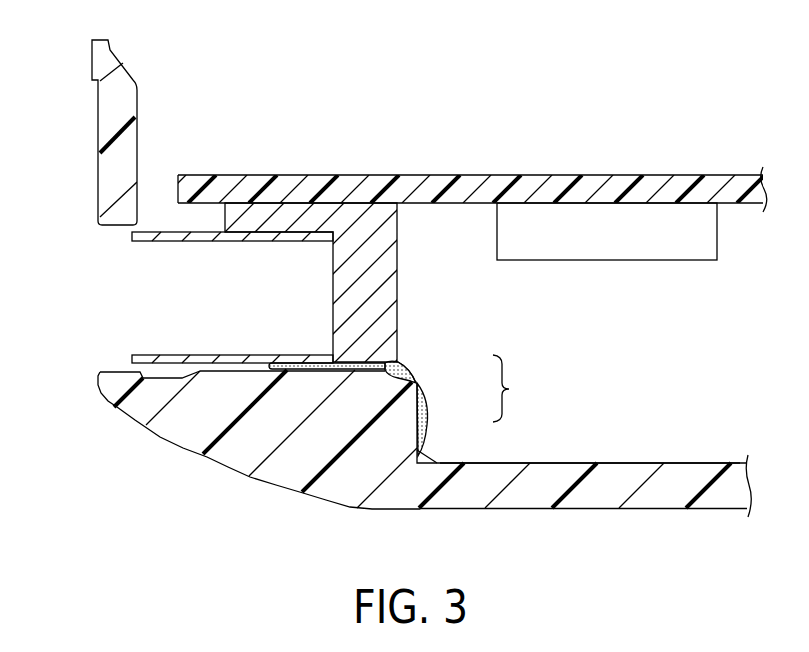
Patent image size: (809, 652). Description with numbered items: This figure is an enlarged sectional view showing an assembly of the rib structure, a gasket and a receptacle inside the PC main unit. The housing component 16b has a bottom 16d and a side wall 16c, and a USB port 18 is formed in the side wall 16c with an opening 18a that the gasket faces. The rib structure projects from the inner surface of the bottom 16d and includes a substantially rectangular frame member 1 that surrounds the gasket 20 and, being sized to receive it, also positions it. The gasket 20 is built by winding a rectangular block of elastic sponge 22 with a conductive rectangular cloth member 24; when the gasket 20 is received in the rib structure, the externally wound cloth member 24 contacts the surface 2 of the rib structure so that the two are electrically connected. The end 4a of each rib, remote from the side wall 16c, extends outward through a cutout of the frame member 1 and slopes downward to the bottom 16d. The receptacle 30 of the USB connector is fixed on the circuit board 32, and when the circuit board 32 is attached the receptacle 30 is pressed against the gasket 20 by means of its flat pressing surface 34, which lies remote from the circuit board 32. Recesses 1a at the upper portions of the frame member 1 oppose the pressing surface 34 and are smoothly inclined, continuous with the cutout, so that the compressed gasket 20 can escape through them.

The frame member 1 is at (225, 373).
The recesses 1a is at (417, 380).
The surface 2 is at (635, 462).
The end of rib 4a is at (438, 459).
The housing component 16b is at (148, 458).
The side wall 16c is at (98, 114).
The bottom 16d is at (608, 495).
The USB port 18 is at (95, 316).
The opening 18a is at (117, 268).
The gasket 20 is at (519, 388).
The elastic sponge 22 is at (428, 420).
The conductive cloth member 24 is at (416, 382).
The receptacle 30 is at (397, 238).
The circuit board 32 is at (501, 174).
The pressing surface 34 is at (245, 368).